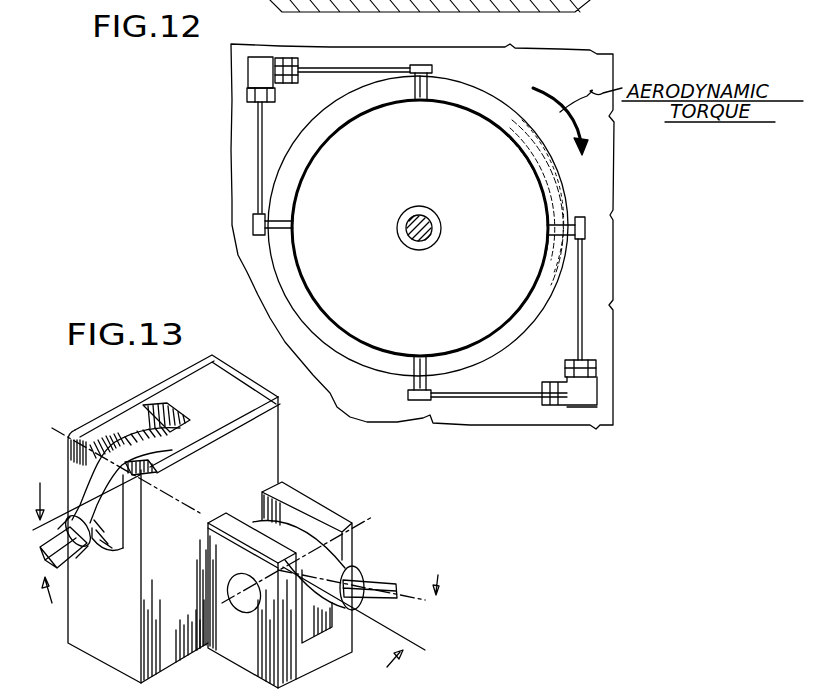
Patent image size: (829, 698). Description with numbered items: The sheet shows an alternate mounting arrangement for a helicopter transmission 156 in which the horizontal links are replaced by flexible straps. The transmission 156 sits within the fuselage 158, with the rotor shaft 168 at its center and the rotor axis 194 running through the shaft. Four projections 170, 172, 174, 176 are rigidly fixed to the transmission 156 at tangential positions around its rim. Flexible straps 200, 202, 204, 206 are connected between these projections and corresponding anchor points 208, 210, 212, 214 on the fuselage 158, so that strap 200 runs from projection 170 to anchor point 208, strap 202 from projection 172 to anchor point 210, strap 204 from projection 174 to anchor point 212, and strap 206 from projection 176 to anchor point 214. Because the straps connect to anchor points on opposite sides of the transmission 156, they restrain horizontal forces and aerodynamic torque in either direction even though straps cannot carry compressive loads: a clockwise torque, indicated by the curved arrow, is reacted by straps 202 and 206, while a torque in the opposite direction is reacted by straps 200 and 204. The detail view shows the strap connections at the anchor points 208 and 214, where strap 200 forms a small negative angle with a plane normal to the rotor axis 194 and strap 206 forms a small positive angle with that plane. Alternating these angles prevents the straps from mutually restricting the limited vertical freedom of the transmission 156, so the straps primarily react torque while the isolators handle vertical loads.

In FIG. 12, the transmission 156 is at (376, 191).
In FIG. 12, the fuselage 158 is at (600, 163).
In FIG. 12, the rotor shaft 168 is at (418, 252).
In FIG. 12, the projection 170 is at (256, 235).
In FIG. 12, the projection 172 is at (413, 375).
In FIG. 12, the projection 174 is at (558, 224).
In FIG. 12, the projection 176 is at (427, 90).
In FIG. 12, the rotor axis 194 is at (398, 239).
In FIG. 12, the flexible strap 200 is at (258, 151).
In FIG. 13, the flexible strap 200 is at (78, 555).
In FIG. 12, the flexible strap 202 is at (510, 397).
In FIG. 12, the flexible strap 204 is at (605, 259).
In FIG. 12, the flexible strap 206 is at (350, 70).
In FIG. 13, the flexible strap 206 is at (380, 586).
In FIG. 12, the anchor point 208 is at (247, 93).
In FIG. 13, the anchor point 208 is at (185, 492).
In FIG. 12, the anchor point 210 is at (552, 407).
In FIG. 12, the anchor point 212 is at (596, 367).
In FIG. 12, the anchor point 214 is at (330, 36).
In FIG. 13, the anchor point 214 is at (250, 605).